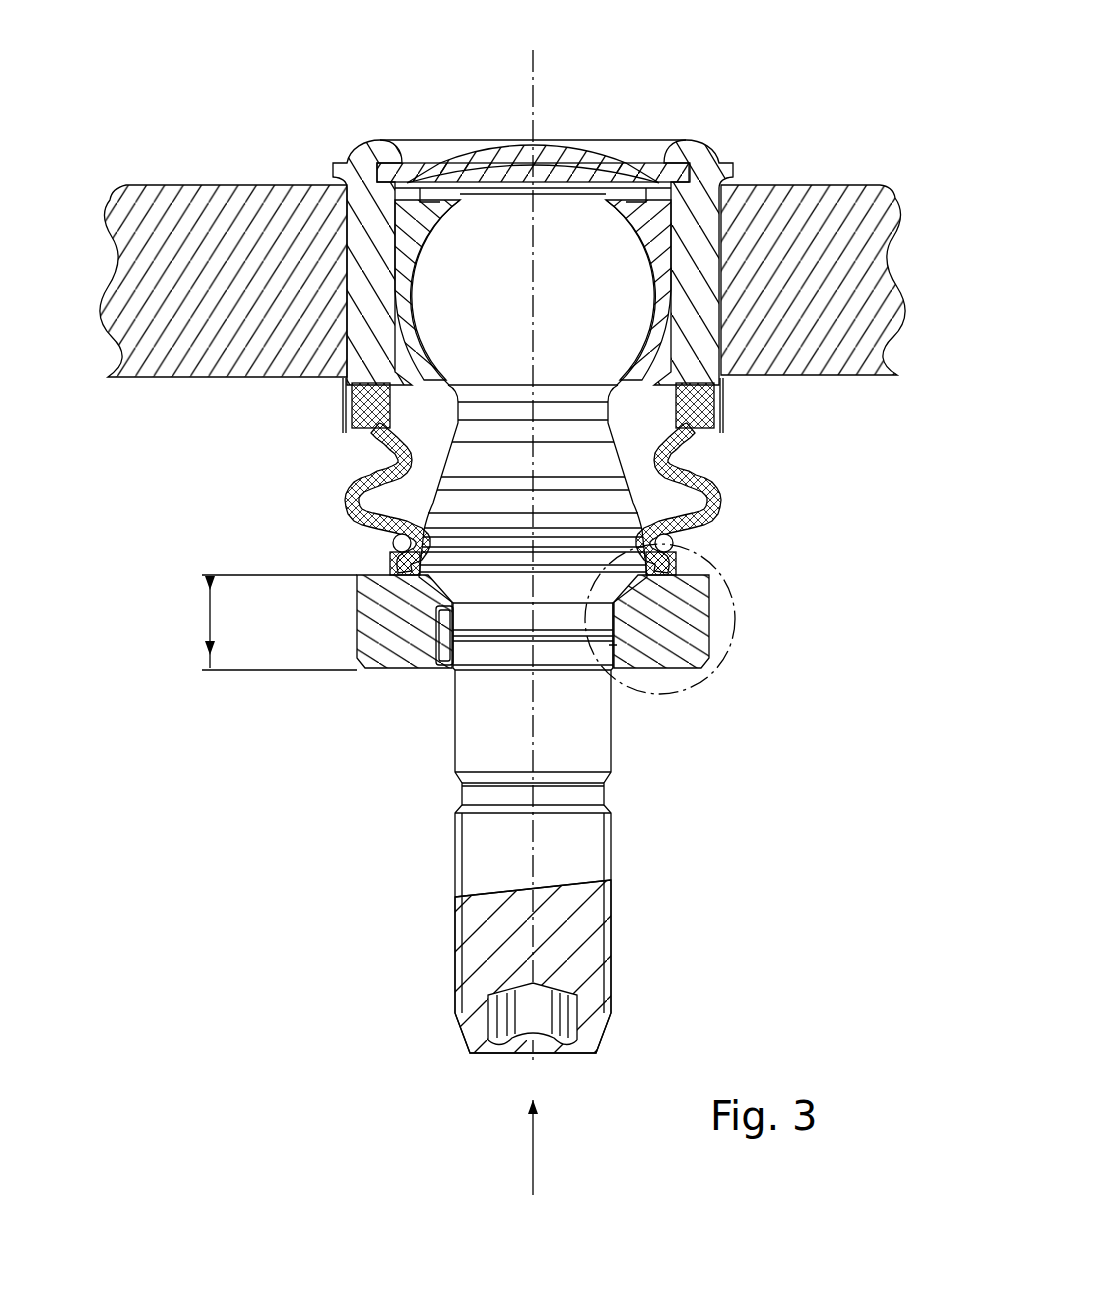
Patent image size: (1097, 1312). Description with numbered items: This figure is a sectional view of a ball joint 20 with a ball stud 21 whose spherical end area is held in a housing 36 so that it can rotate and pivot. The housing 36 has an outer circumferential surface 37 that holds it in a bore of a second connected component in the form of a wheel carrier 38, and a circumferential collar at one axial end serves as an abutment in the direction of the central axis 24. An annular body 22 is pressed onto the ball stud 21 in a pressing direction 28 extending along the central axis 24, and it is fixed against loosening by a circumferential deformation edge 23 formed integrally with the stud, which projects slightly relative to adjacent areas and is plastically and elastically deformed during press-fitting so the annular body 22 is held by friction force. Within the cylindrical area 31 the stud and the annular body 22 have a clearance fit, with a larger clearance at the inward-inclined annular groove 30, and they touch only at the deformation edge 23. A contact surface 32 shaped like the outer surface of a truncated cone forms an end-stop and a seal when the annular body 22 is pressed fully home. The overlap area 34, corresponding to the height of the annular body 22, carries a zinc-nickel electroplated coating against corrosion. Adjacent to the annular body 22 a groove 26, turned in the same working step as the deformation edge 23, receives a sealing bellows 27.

The ball joint 20 is at (708, 98).
The ball stud 21 is at (620, 738).
The annular body 22 is at (692, 612).
The deformation edge 23 is at (614, 646).
The central axis 24 is at (533, 68).
The groove 26 is at (670, 538).
The sealing bellows 27 is at (730, 474).
The pressing direction 28 is at (533, 1158).
The annular groove 30 is at (615, 636).
The cylindrical area 31 is at (441, 607).
The contact surface 32 is at (437, 595).
The overlap area 34 is at (208, 628).
The housing 36 is at (700, 168).
The outer circumferential surface 37 is at (338, 408).
The wheel carrier 38 is at (245, 197).